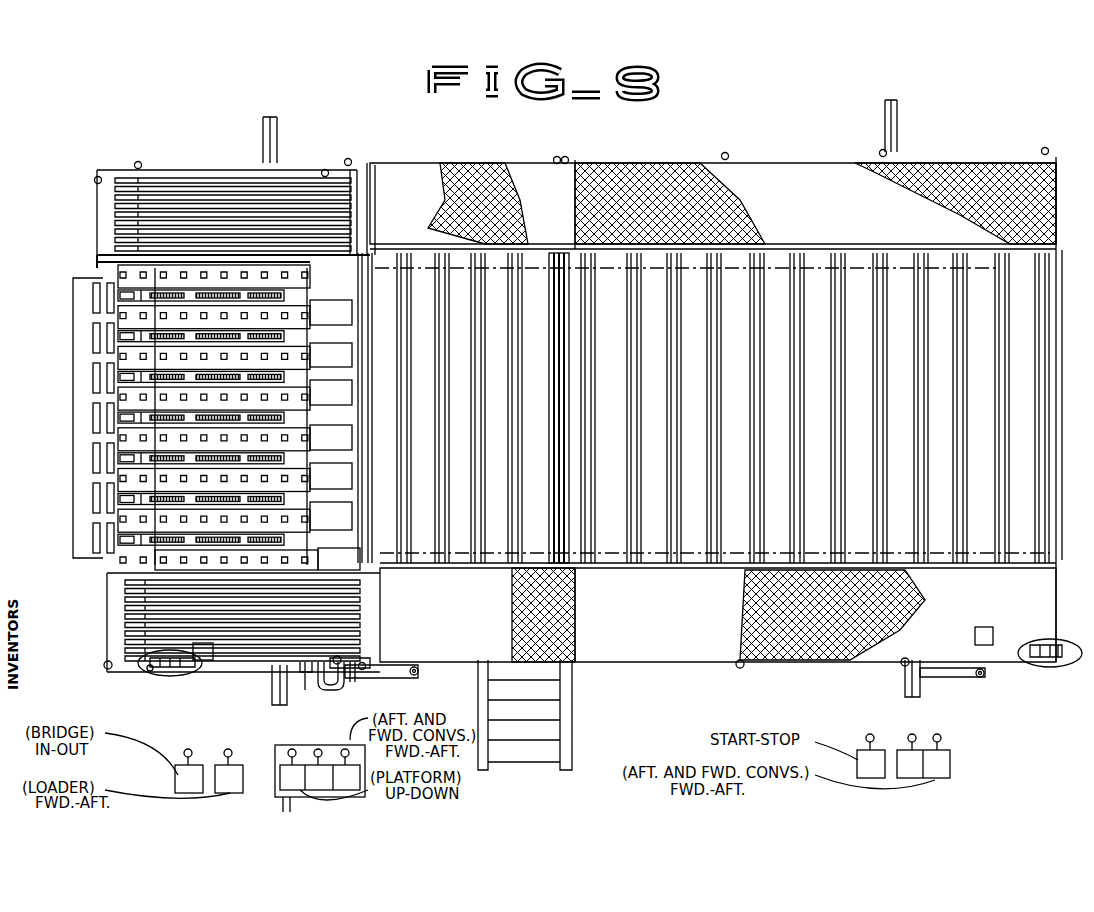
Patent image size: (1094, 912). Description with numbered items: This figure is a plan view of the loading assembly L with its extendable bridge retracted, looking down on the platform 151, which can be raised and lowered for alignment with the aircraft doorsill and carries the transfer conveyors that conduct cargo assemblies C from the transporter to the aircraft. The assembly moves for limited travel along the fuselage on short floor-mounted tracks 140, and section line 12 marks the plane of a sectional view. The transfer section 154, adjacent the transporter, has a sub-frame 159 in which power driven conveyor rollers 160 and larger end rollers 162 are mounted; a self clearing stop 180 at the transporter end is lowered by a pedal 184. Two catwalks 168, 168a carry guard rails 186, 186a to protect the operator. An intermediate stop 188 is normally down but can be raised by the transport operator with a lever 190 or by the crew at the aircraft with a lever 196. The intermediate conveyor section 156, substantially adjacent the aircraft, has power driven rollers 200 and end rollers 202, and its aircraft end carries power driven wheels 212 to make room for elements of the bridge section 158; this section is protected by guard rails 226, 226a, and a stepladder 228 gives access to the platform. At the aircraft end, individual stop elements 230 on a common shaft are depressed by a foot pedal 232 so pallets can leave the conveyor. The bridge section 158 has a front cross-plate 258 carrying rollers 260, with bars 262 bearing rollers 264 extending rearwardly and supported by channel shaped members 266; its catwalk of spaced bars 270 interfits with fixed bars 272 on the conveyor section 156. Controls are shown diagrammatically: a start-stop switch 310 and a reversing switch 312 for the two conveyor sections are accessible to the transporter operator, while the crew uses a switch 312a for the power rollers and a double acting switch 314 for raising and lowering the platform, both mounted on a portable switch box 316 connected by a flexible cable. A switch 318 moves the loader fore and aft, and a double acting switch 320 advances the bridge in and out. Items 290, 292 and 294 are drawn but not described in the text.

The guard rail 226a is at (135, 162).
The track 140 is at (263, 125).
The fixed bar 272 is at (362, 178).
The guard rail 186a is at (566, 157).
The loading assembly L is at (650, 160).
The platform 151 is at (768, 164).
The spaced bars 270 is at (100, 198).
The intermediate conveyor section 156 is at (383, 250).
The cargo assembly C is at (420, 268).
The intermediate stop 188 is at (572, 268).
The catwalk 168a is at (713, 204).
The transfer section 154 is at (851, 244).
The sub-frame 159 is at (790, 250).
The self clearing stop 180 is at (1015, 268).
The bridge section 158 is at (95, 266).
The rollers 260 is at (95, 295).
The stop element 230 is at (125, 350).
The power driven wheels 212 is at (250, 340).
The bar 262 is at (300, 282).
The upper cross-plate 258 is at (80, 338).
The rollers 264 is at (127, 395).
The channel shaped member 266 is at (310, 430).
The section line 12 is at (45, 480).
The end roller 202 is at (375, 545).
The power driven rollers 200 is at (448, 545).
The end roller 162 is at (605, 540).
The conveyor rollers 160 is at (705, 540).
The catwalk 168 is at (718, 615).
The pedal 184 is at (990, 628).
The lever 190 is at (945, 668).
The guard rail 226 is at (108, 665).
The control valve 292 is at (168, 676).
The foot pedal 232 is at (252, 745).
The lever 196 is at (400, 680).
The bracket 290 is at (340, 688).
The pin 294 is at (305, 692).
The portable switch box 316 is at (345, 748).
The switch 312a is at (340, 768).
The double acting switch 314 is at (288, 772).
The switch 318 is at (222, 770).
The double acting switch 320 is at (178, 770).
The stepladder 228 is at (572, 708).
The start-stop switch 310 is at (862, 755).
The reversing switch 312 is at (940, 762).
The guard rail 186 is at (905, 664).